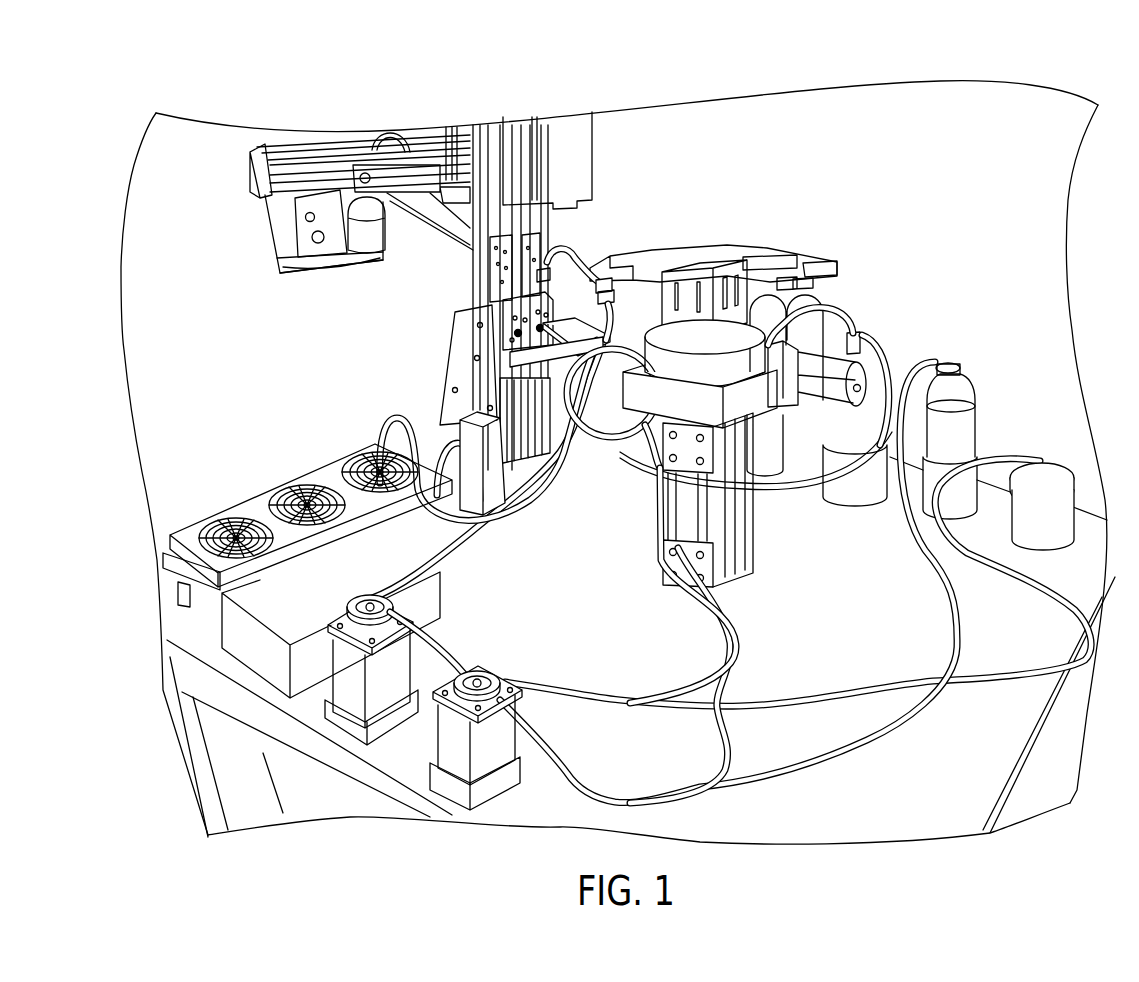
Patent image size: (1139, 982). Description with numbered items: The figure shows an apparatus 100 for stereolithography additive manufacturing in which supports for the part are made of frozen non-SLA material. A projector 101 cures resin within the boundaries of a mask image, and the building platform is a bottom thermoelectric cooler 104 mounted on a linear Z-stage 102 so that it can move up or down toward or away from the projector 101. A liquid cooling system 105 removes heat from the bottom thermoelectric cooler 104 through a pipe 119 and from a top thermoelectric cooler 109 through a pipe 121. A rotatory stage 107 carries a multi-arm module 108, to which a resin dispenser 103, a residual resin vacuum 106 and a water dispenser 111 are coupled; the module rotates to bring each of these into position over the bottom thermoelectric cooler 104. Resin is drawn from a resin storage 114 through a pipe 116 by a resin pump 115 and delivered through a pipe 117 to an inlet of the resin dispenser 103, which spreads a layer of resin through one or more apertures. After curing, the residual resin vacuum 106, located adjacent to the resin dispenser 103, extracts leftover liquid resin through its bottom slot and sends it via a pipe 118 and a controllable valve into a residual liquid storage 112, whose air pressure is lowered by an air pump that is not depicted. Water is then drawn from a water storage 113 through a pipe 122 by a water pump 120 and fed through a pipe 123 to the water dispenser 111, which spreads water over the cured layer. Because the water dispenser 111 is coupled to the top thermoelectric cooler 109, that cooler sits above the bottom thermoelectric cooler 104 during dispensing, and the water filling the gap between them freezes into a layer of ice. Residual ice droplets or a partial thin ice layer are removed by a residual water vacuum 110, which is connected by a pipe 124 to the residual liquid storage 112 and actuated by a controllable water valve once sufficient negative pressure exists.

The apparatus 100 is at (200, 83).
The projector 101 is at (510, 168).
The linear Z-stage 102 is at (492, 243).
The resin dispenser 103 is at (543, 280).
The bottom thermoelectric cooler 104 is at (580, 330).
The liquid cooling system 105 is at (273, 583).
The residual resin vacuum 106 is at (582, 267).
The rotatory stage 107 is at (655, 367).
The multi-arm module 108 is at (670, 282).
The top thermoelectric cooler 109 is at (826, 278).
The residual water vacuum 110 is at (820, 262).
The water dispenser 111 is at (755, 260).
The residual liquid storage 112 is at (857, 340).
The water storage 113 is at (958, 366).
The resin storage 114 is at (1043, 470).
The resin pump 115 is at (363, 602).
The pipe 116 is at (865, 683).
The pipe 117 is at (707, 616).
The pipe 118 is at (600, 438).
The pipe 119 is at (493, 543).
The water pump 120 is at (487, 672).
The pipe 121 is at (427, 573).
The pipe 122 is at (957, 640).
The pipe 123 is at (747, 615).
The pipe 124 is at (770, 480).